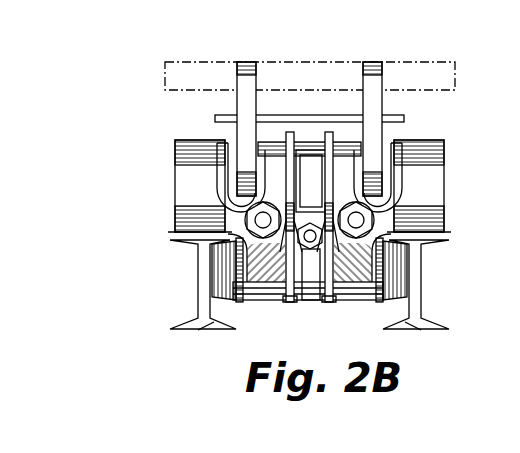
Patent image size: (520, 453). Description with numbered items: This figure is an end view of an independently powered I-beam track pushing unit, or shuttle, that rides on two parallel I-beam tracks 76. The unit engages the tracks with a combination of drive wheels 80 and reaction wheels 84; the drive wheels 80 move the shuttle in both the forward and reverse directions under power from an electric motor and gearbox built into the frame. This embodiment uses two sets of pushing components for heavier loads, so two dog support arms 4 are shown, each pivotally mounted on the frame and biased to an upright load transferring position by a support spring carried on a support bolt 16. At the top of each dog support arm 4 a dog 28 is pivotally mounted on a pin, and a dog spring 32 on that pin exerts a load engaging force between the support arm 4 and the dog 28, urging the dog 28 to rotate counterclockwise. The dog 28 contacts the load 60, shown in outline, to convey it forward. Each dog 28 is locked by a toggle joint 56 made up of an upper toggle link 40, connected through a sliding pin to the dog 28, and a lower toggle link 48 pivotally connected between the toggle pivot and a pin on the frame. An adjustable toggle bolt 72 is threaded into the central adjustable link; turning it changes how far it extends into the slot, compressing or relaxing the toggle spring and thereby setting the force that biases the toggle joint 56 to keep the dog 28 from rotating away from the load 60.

The dog support arm 4 is at (222, 193).
The support bolt 16 is at (248, 223).
The dog 28 is at (365, 80).
The dog spring 32 is at (238, 132).
The upper toggle link 40 is at (308, 177).
The lower toggle link 48 is at (290, 303).
The toggle joint 56 is at (314, 314).
The load 60 is at (420, 70).
The adjustable toggle bolt 72 is at (340, 303).
The I-beam tracks 76 is at (200, 328).
The drive wheels 80 is at (185, 185).
The reaction wheels 84 is at (226, 268).